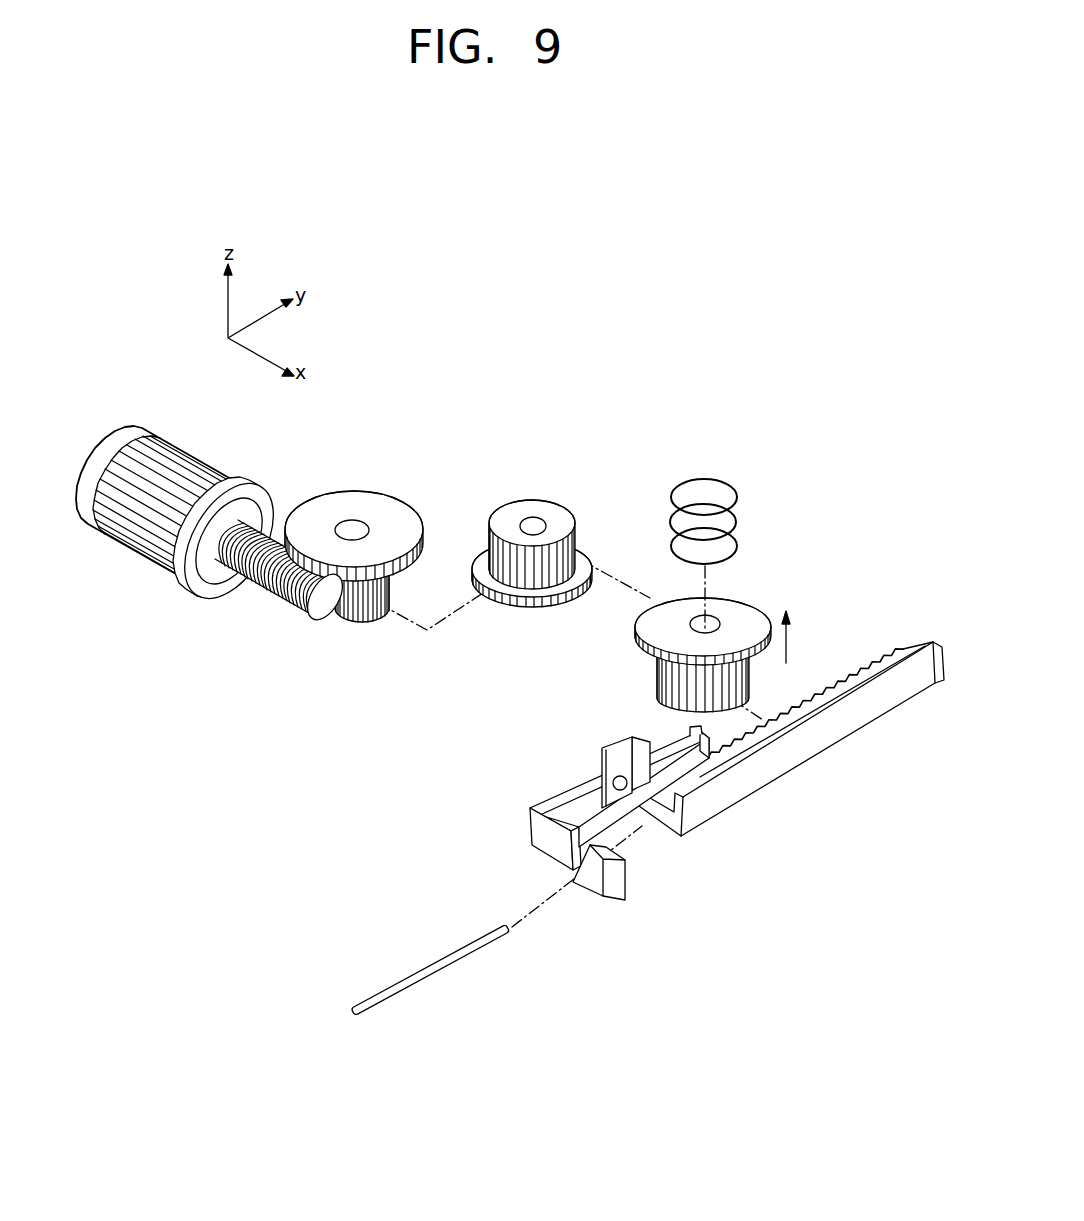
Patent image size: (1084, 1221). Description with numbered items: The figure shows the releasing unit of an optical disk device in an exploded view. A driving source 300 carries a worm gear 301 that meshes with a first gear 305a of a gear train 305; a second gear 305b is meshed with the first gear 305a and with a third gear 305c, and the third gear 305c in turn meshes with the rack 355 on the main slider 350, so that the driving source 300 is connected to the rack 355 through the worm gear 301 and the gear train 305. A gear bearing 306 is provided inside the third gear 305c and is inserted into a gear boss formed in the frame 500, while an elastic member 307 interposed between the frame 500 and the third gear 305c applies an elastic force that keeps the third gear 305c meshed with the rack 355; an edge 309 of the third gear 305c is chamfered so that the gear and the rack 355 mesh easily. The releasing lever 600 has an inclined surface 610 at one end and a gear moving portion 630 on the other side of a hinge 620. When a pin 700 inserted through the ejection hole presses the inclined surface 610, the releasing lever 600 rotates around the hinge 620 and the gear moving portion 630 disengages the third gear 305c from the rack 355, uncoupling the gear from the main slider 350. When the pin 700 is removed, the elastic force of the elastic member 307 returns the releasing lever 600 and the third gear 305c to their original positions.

The driving source 300 is at (147, 553).
The worm gear 301 is at (273, 597).
The gear train 305 is at (558, 524).
The first gear 305a is at (385, 517).
The second gear 305b is at (542, 507).
The third gear 305c is at (716, 564).
The gear bearing 306 is at (712, 621).
The elastic member 307 is at (737, 490).
The edge 309 is at (747, 707).
The main slider 350 is at (790, 712).
The rack 355 is at (855, 666).
The frame 500 is at (602, 753).
The releasing lever 600 is at (543, 824).
The inclined surface 610 is at (594, 890).
The hinge 620 is at (620, 792).
The gear moving portion 630 is at (677, 727).
The pin 700 is at (447, 963).